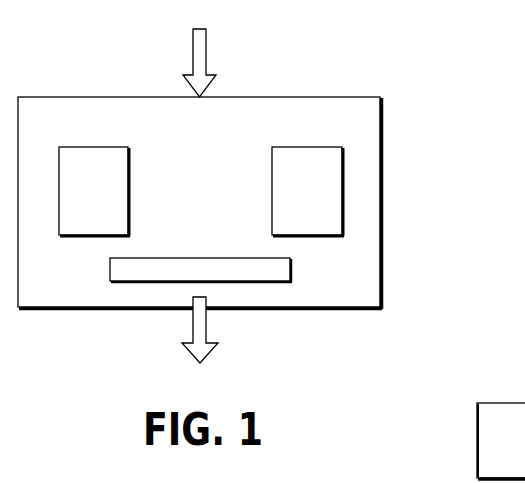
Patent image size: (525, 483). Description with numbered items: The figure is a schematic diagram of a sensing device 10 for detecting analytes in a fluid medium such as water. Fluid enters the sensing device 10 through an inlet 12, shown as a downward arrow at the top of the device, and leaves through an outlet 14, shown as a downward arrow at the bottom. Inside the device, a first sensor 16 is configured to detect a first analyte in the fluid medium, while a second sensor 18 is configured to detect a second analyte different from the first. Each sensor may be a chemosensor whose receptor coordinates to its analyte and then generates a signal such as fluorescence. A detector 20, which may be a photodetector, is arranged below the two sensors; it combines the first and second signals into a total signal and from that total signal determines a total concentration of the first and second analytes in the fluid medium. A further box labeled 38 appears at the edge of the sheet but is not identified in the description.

The sensing device 10 is at (420, 74).
The inlet 12 is at (192, 58).
The outlet 14 is at (207, 325).
The first sensor 16 is at (128, 200).
The second sensor 18 is at (272, 168).
The detector 20 is at (165, 258).
The external component 38 is at (501, 420).